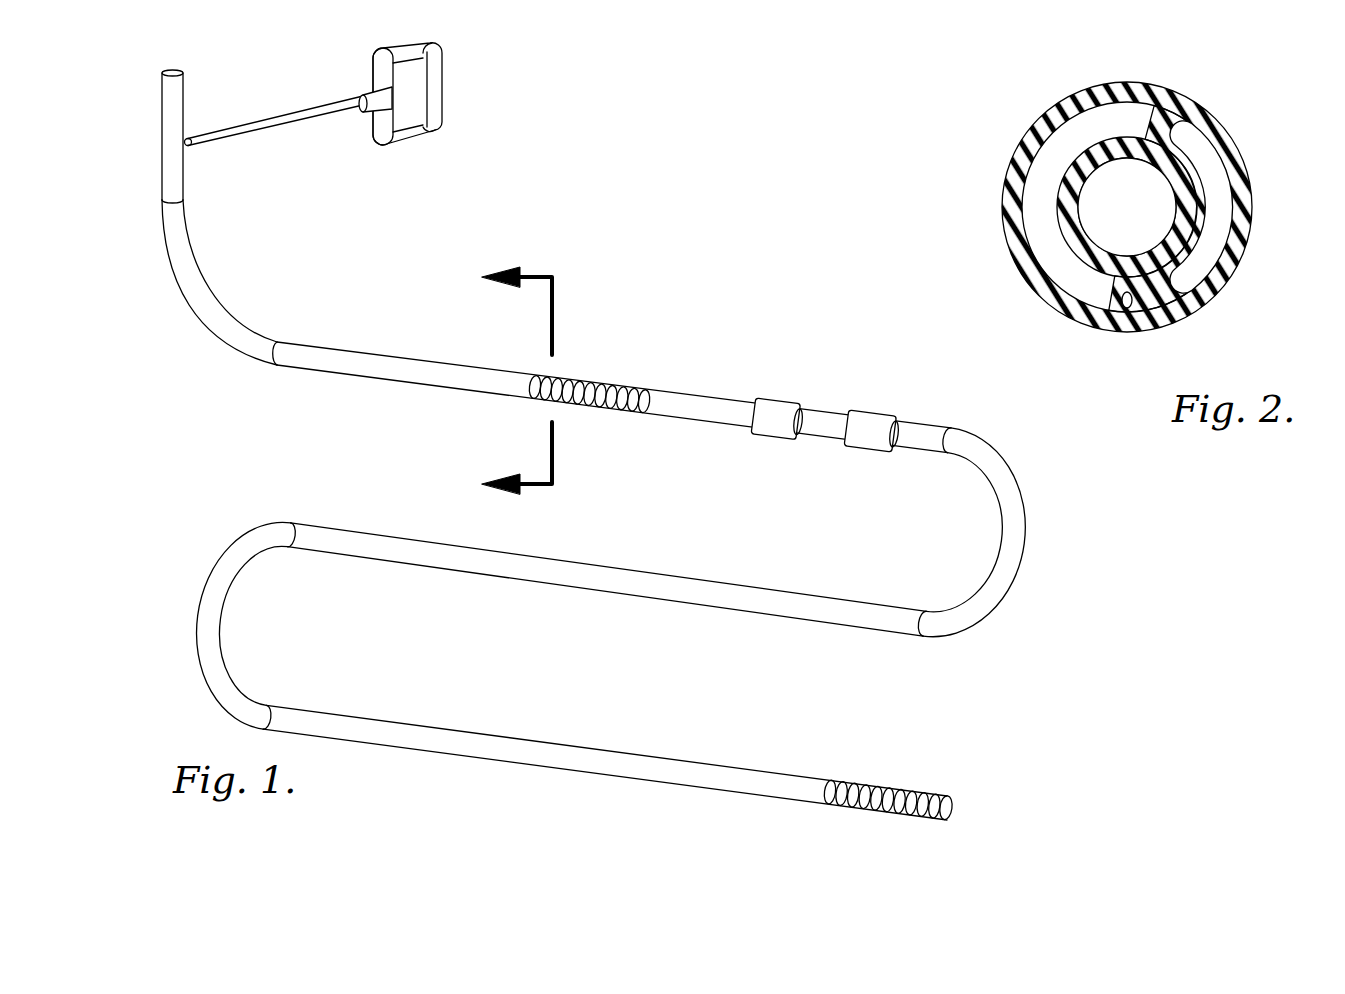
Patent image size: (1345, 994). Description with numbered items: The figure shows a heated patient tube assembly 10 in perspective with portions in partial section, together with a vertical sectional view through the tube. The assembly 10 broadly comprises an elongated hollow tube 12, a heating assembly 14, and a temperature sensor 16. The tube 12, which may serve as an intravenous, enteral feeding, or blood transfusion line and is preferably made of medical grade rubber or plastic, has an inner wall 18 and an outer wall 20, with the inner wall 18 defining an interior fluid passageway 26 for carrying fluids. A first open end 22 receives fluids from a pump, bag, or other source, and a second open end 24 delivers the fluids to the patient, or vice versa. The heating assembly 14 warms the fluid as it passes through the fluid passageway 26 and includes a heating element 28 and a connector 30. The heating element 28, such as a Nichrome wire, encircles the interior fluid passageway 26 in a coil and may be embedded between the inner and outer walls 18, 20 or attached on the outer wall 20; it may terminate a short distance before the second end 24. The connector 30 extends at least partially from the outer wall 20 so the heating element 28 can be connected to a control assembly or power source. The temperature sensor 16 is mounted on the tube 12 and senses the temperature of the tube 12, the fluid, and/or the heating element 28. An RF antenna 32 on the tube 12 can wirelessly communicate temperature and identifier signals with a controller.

In FIG. 1, the heated patient tube assembly 10 is at (718, 352).
In FIG. 1, the elongated hollow tube 12 is at (355, 358).
In FIG. 2, the elongated hollow tube 12 is at (1036, 92).
In FIG. 1, the heating assembly 14 is at (584, 354).
In FIG. 1, the temperature sensor 16 is at (778, 422).
In FIG. 2, the inner wall 18 is at (1166, 300).
In FIG. 2, the outer wall 20 is at (1238, 262).
In FIG. 1, the first open end 22 is at (200, 60).
In FIG. 1, the second open end 24 is at (978, 806).
In FIG. 2, the interior fluid passageway 26 is at (1164, 212).
In FIG. 1, the heating element 28 is at (628, 384).
In FIG. 2, the heating element 28 is at (1045, 245).
In FIG. 1, the connector 30 is at (462, 78).
In FIG. 1, the RF antenna 32 is at (876, 418).